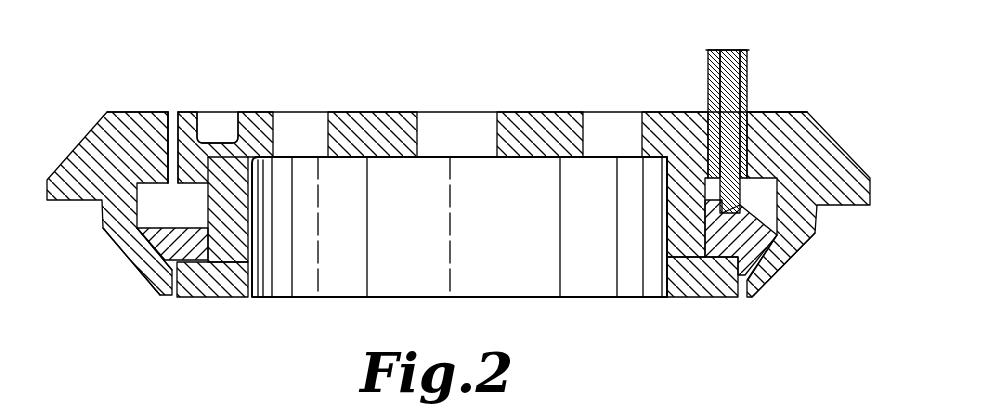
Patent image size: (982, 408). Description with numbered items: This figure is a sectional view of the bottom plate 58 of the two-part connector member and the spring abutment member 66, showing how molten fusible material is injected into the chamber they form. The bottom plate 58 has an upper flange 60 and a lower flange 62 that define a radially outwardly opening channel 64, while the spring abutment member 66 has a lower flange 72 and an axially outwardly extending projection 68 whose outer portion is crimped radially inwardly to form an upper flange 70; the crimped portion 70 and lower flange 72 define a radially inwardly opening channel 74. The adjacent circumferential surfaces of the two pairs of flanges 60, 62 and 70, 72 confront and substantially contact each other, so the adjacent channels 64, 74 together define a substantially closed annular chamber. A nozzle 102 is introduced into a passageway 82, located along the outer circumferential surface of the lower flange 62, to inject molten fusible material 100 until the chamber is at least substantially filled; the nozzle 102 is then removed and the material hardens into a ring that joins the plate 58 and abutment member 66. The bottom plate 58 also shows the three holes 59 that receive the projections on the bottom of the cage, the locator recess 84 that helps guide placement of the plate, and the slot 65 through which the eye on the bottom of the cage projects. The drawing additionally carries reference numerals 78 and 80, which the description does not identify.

The bottom plate 58 is at (677, 300).
The holes 59 is at (312, 112).
The upper flange 60 is at (200, 292).
The lower flange 62 is at (188, 112).
The radially outwardly opening channel 64 is at (213, 190).
The slot 65 is at (418, 135).
The spring abutment member 66 is at (68, 203).
The axially outwardly extending projection 68 is at (800, 226).
The upper flange 70 is at (133, 263).
The lower flange 72 is at (767, 123).
The radially inwardly opening channel 74 is at (145, 178).
The inner wedge 78 is at (173, 290).
The slot 80 is at (173, 110).
The passageway 82 is at (727, 92).
The locator recess 84 is at (213, 120).
The molten fusible material 100 is at (193, 227).
The nozzle 102 is at (745, 63).